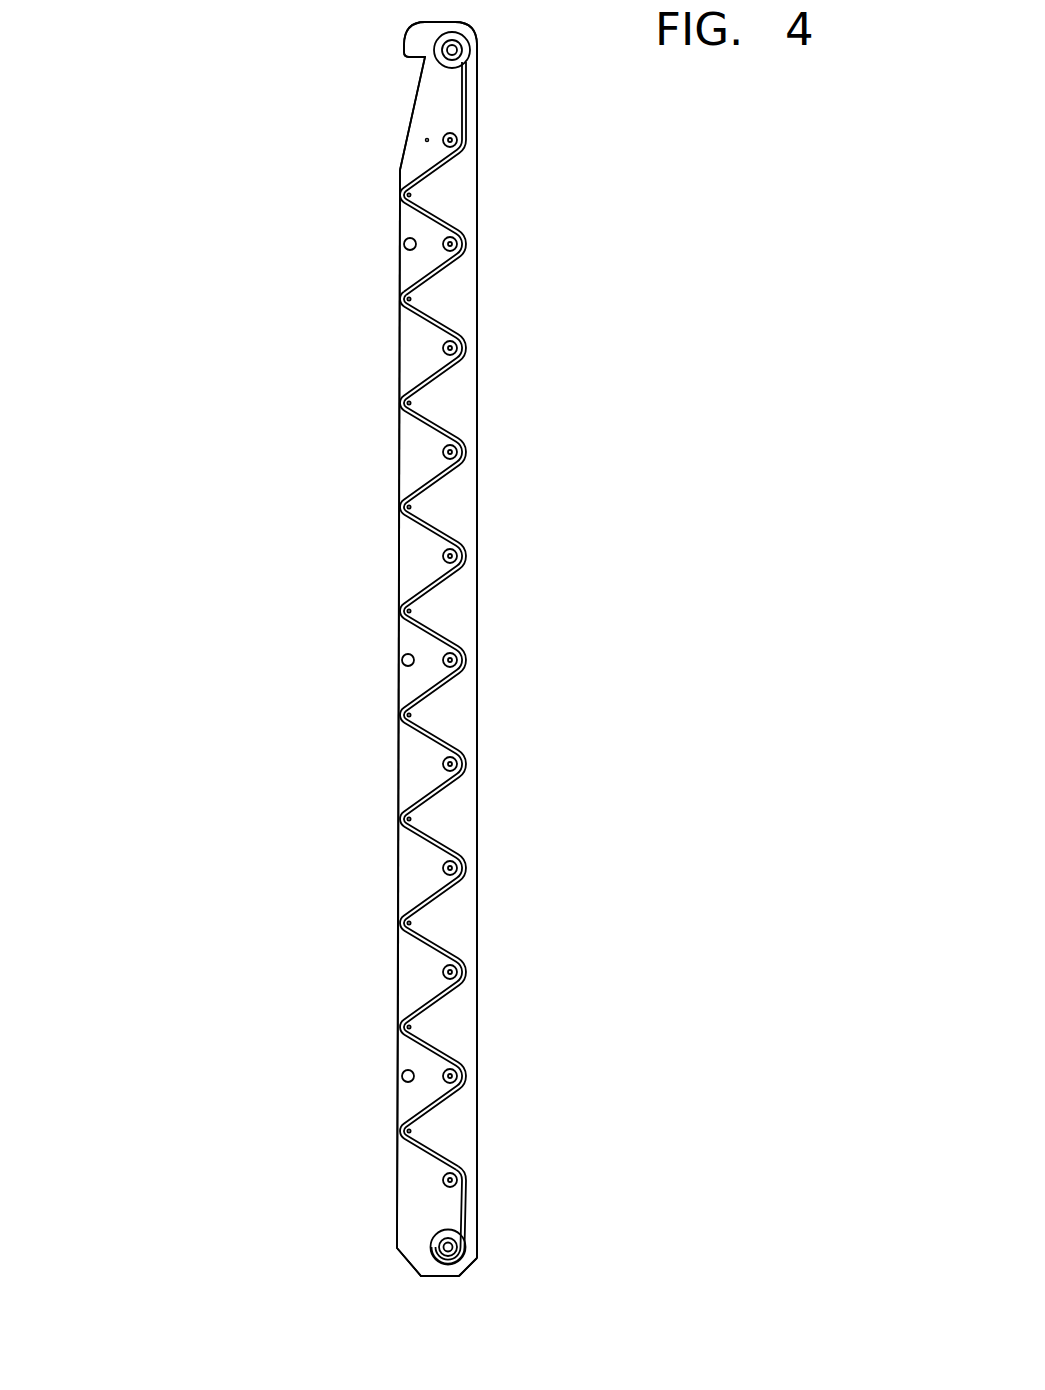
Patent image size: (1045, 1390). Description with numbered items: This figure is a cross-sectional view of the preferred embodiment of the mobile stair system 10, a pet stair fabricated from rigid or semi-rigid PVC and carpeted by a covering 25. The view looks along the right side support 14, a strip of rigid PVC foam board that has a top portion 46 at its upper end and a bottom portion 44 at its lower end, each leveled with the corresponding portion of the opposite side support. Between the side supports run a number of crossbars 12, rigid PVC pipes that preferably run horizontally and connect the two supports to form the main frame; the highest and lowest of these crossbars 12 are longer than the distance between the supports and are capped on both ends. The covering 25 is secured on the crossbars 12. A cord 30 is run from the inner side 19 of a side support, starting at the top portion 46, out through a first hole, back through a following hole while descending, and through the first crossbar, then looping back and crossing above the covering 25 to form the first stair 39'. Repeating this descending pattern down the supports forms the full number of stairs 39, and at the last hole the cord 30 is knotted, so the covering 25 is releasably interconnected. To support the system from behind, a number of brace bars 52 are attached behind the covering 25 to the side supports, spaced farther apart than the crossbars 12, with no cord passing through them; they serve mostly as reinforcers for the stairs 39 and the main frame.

The mobile stair system 10 is at (290, 668).
The crossbars 12 is at (268, 660).
The right side support 14 is at (400, 350).
The inner side 19 is at (478, 592).
The covering 25 is at (428, 1298).
The cord 30 is at (409, 403).
The stairs 39 is at (556, 731).
The first stair 39' is at (562, 178).
The bottom portion 44 is at (397, 1163).
The top portion 46 is at (409, 130).
The brace bars 52 is at (247, 660).